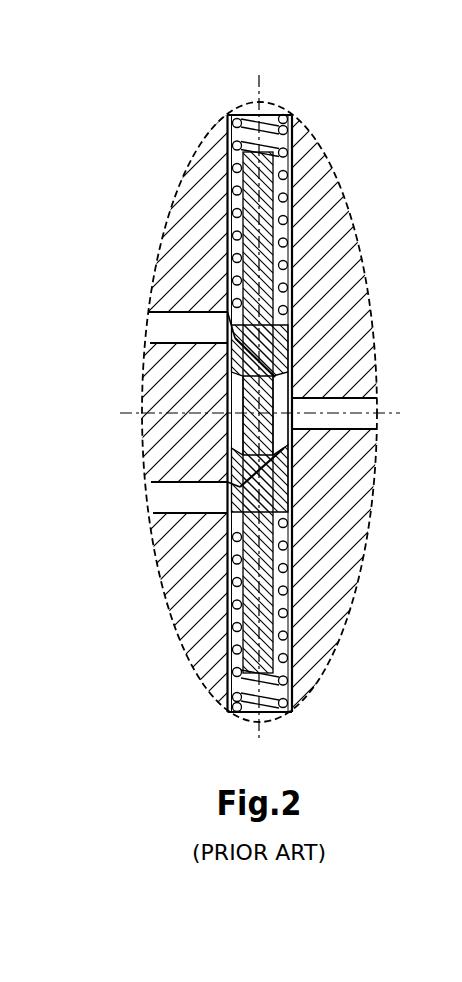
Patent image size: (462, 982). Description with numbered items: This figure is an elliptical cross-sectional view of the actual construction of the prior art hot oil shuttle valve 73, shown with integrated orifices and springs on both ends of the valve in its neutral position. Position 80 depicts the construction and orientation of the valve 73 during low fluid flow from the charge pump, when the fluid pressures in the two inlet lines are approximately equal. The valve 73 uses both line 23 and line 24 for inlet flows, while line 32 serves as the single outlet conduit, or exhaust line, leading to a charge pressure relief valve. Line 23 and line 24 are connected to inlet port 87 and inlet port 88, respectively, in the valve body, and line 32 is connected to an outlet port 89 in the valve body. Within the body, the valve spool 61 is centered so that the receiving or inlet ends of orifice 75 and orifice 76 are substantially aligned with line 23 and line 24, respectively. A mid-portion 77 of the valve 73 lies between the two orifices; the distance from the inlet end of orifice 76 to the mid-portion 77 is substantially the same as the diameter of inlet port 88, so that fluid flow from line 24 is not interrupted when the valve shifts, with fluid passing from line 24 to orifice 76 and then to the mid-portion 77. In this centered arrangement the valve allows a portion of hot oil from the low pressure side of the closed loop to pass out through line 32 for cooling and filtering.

The position 80 is at (230, 74).
The hot oil shuttle valve 73 is at (240, 398).
The inlet port 87 is at (227, 312).
The line 23 is at (162, 327).
The orifice 75 is at (222, 343).
The mid-portion 77 is at (236, 403).
The orifice 76 is at (240, 470).
The inlet port 88 is at (227, 481).
The line 24 is at (167, 497).
The valve spool 61 is at (297, 325).
The outlet port 89 is at (293, 394).
The line 32 is at (368, 422).